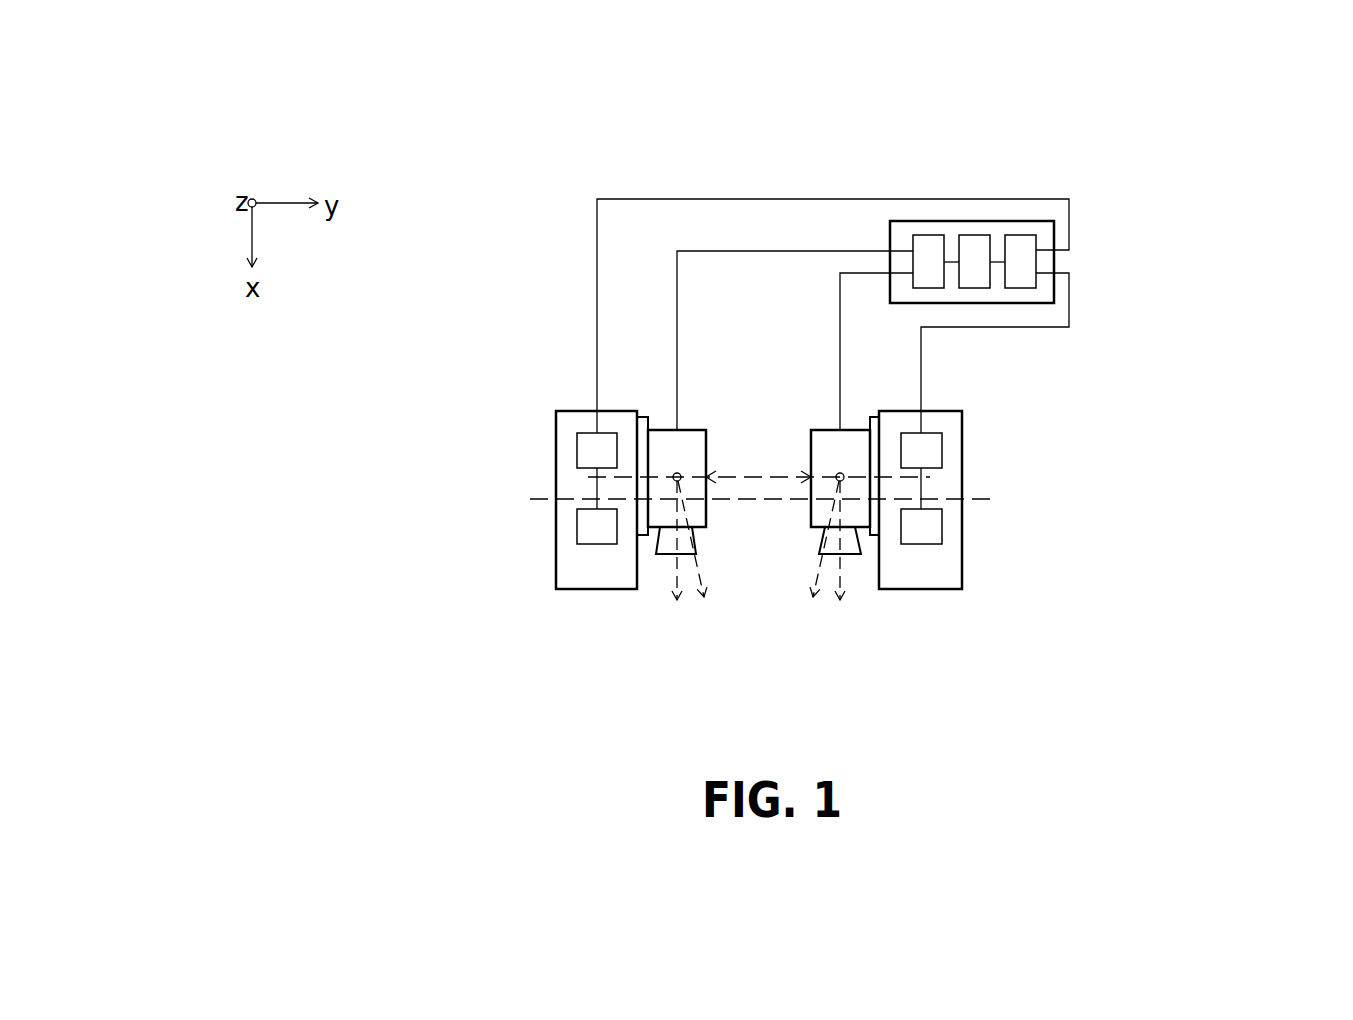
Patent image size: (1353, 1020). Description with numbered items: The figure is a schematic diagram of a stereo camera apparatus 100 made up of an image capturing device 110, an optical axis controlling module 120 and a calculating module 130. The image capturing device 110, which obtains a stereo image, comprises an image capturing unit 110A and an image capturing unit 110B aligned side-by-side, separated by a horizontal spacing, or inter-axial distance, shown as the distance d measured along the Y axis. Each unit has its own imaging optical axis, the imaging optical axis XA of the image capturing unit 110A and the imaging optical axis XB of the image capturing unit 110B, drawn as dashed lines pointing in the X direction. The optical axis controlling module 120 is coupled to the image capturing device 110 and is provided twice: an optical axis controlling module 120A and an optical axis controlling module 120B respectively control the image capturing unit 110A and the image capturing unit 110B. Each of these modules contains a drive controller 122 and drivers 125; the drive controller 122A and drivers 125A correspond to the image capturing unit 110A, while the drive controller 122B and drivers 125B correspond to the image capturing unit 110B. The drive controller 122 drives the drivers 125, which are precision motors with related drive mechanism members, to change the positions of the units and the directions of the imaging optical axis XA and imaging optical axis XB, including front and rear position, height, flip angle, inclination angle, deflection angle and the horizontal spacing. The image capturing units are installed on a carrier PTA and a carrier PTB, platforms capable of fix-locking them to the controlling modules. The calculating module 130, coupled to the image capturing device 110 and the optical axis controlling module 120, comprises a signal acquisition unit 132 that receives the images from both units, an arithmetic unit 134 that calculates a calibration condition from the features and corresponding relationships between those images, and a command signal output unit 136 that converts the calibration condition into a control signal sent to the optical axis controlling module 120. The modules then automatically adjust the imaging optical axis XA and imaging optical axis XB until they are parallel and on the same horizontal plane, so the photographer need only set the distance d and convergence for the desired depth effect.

The stereo camera apparatus 100 is at (1098, 732).
The image capturing device 110 is at (817, 357).
The image capturing unit 110A is at (681, 438).
The image capturing unit 110B is at (826, 438).
The optical axis controlling module 120 is at (308, 435).
The optical axis controlling module 120A is at (570, 572).
The optical axis controlling module 120B is at (945, 572).
The drive controller 122 is at (308, 518).
The drive controller 122A is at (582, 452).
The drive controller 122B is at (935, 452).
The drivers 125 is at (308, 602).
The drivers 125A is at (583, 527).
The drivers 125B is at (935, 527).
The calculating module 130 is at (897, 232).
The signal acquisition unit 132 is at (937, 243).
The arithmetic unit 134 is at (988, 243).
The command signal output unit 136 is at (1033, 243).
The carrier PTA is at (641, 537).
The carrier PTB is at (876, 537).
The imaging optical axis XA is at (690, 570).
The imaging optical axis XB is at (840, 580).
The distance d is at (758, 465).